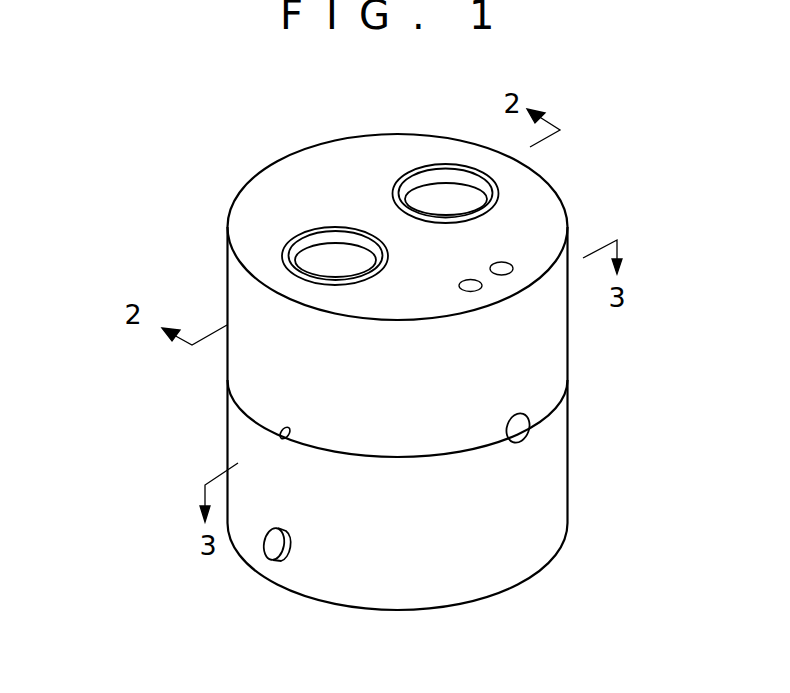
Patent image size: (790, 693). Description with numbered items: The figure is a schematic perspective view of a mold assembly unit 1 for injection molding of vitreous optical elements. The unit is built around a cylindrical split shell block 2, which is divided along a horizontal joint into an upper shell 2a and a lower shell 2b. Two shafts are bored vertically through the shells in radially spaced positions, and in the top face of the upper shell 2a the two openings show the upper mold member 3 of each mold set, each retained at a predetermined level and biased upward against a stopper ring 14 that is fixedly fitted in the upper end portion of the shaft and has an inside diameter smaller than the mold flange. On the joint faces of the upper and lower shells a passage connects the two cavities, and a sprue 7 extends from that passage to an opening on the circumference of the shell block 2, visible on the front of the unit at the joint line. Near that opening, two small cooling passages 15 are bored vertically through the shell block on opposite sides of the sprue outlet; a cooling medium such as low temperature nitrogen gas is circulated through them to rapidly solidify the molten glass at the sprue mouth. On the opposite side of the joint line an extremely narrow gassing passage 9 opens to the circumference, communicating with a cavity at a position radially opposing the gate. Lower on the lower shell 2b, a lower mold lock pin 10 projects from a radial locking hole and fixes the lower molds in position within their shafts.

The mold assembly unit 1 is at (222, 398).
The split shell block 2 is at (568, 377).
The upper shell 2a is at (253, 315).
The lower shell 2b is at (563, 432).
The upper mold member 3 is at (435, 197).
The sprue 7 is at (530, 432).
The gassing passage 9 is at (282, 436).
The lower mold lock pin 10 is at (275, 548).
The stopper ring 14 is at (454, 164).
The cooling passages 15 is at (470, 279).